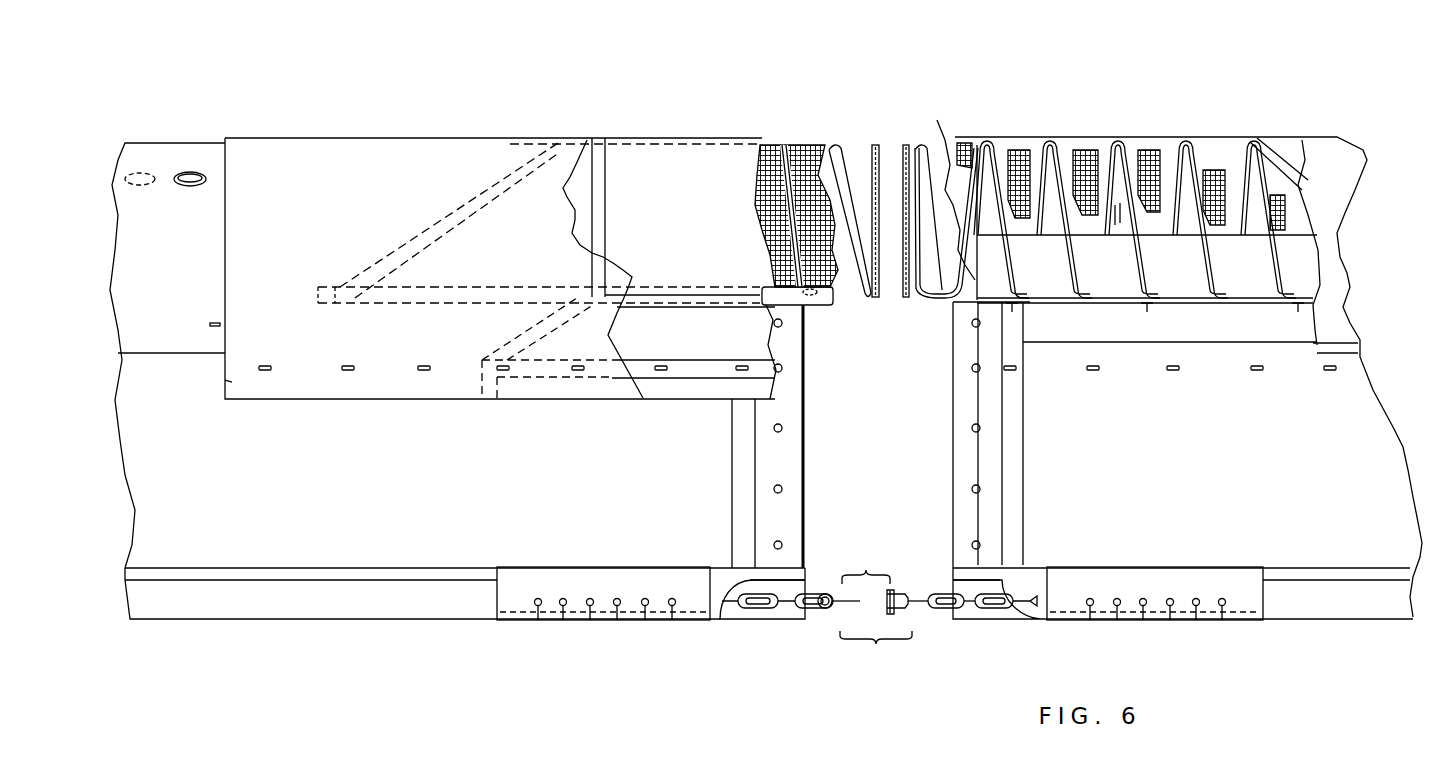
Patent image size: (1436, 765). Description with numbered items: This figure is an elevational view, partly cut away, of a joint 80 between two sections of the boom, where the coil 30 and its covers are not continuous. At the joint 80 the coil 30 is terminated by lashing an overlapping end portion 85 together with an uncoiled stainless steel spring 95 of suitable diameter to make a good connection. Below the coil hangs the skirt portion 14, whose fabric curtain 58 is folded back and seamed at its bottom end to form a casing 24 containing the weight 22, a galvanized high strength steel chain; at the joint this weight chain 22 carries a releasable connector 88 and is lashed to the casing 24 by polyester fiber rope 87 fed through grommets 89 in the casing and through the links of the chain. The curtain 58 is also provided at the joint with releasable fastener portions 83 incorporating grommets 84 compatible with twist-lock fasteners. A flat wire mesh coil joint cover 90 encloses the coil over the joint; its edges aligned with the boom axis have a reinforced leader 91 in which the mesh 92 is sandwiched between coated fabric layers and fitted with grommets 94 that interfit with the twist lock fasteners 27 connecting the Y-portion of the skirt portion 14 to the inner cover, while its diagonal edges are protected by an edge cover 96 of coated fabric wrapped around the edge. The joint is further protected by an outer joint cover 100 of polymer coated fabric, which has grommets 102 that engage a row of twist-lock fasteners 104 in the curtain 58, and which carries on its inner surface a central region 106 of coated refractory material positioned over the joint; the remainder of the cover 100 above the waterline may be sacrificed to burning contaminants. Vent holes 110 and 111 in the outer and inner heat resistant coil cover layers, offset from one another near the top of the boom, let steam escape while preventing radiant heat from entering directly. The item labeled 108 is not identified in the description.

The skirt portion 14 is at (303, 625).
The weight 22 is at (772, 612).
The casing 24 is at (405, 601).
The fasteners 27 is at (1128, 318).
The coil 30 is at (940, 160).
The curtain 58 is at (290, 526).
The joint 80 is at (915, 122).
The releasable fastener portions 83 is at (790, 515).
The grommets 84 is at (972, 489).
The overlapping end portion 85 is at (905, 297).
The polyester fiber rope 87 is at (565, 622).
The releasable connector 88 is at (876, 595).
The grommets 89 is at (539, 598).
The wire mesh coil joint cover 90 is at (808, 158).
The reinforced leader 91 is at (368, 298).
The mesh 92 is at (836, 272).
The grommets 94 is at (322, 283).
The uncoiled stainless steel spring 95 is at (890, 150).
The edge cover 96 is at (477, 190).
The outer joint cover 100 is at (353, 157).
The grommets 102 is at (662, 365).
The twist-lock fasteners 104 is at (424, 372).
The central region 106 is at (667, 160).
The plate edge 108 is at (232, 383).
The vent hole 110 is at (190, 172).
The vent hole 111 is at (130, 170).